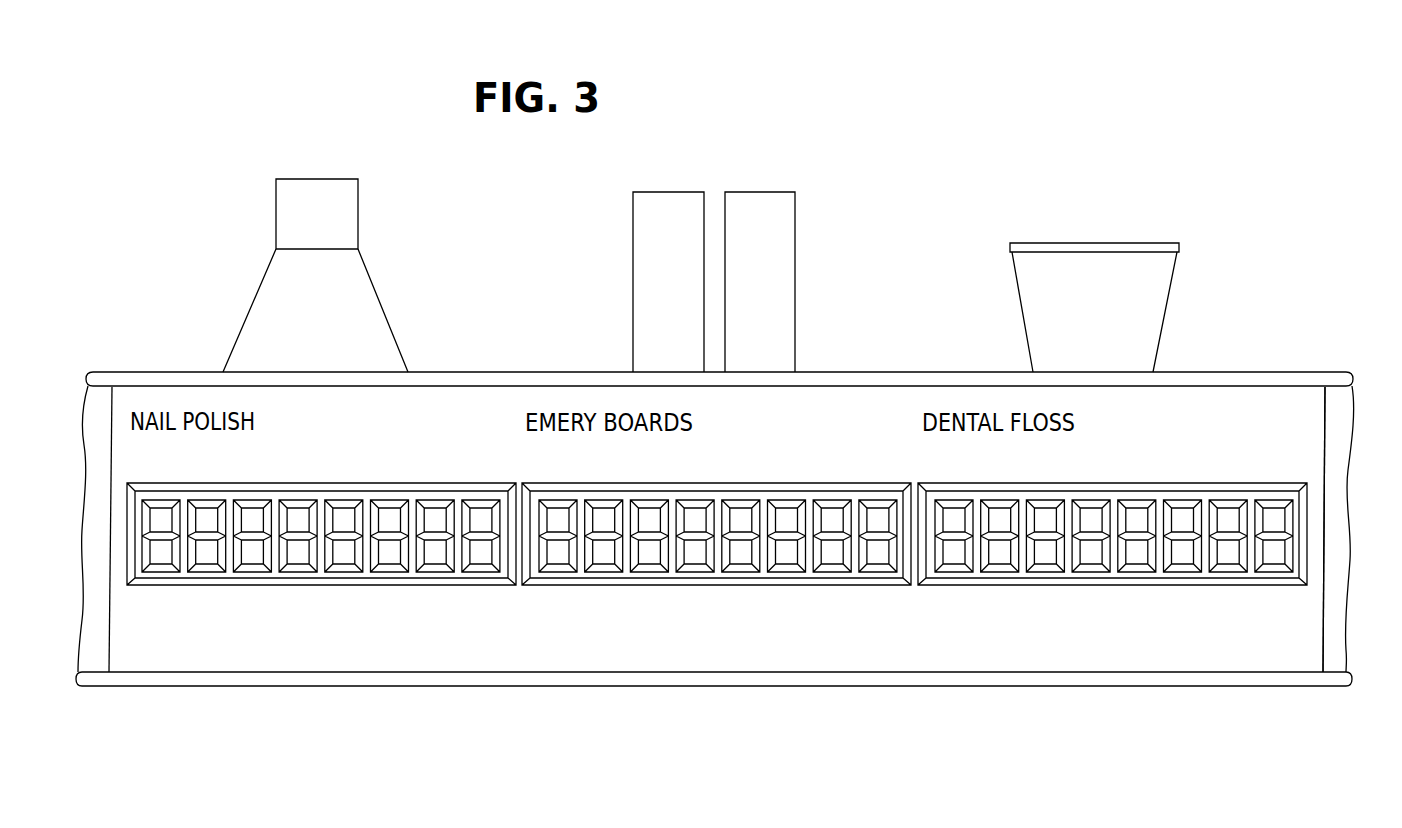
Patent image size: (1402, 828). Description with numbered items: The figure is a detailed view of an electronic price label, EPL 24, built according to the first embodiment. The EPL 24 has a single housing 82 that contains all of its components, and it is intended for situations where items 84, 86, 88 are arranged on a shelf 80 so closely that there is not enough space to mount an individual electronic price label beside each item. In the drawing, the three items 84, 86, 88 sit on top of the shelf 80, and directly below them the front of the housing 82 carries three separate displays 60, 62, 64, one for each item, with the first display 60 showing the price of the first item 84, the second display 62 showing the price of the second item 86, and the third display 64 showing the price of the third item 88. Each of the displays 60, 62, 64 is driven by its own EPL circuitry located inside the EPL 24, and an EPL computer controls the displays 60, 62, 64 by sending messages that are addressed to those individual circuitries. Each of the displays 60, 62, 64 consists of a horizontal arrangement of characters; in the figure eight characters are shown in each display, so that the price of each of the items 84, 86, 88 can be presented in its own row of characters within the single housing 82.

The EPL 24 is at (1327, 638).
The display 60 is at (320, 587).
The display 62 is at (718, 587).
The display 64 is at (1111, 587).
The shelf 80 is at (166, 372).
The housing 82 is at (1325, 425).
The item 84 is at (331, 179).
The item 86 is at (767, 192).
The item 88 is at (1147, 243).